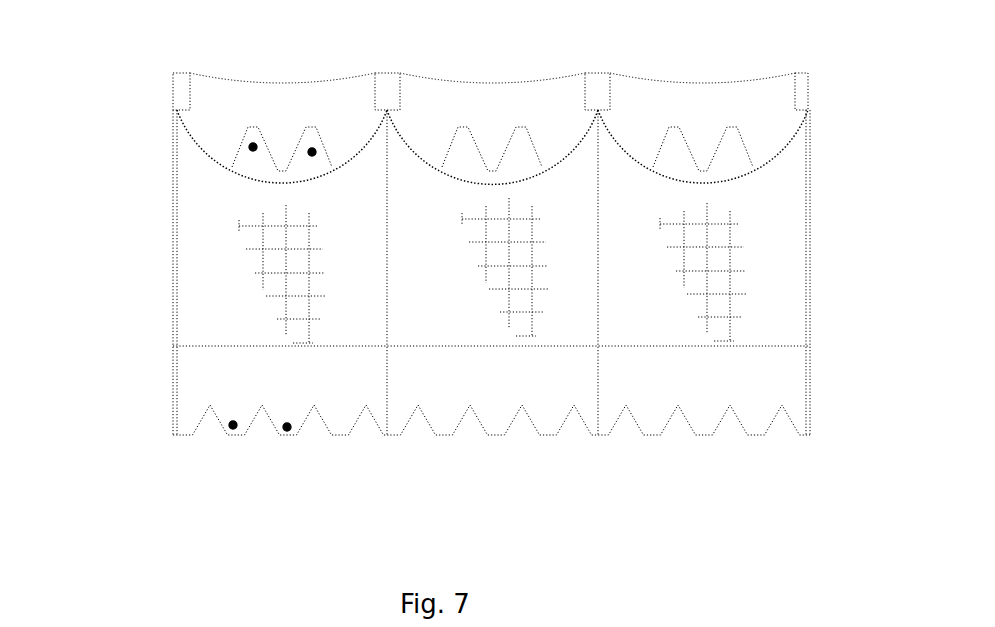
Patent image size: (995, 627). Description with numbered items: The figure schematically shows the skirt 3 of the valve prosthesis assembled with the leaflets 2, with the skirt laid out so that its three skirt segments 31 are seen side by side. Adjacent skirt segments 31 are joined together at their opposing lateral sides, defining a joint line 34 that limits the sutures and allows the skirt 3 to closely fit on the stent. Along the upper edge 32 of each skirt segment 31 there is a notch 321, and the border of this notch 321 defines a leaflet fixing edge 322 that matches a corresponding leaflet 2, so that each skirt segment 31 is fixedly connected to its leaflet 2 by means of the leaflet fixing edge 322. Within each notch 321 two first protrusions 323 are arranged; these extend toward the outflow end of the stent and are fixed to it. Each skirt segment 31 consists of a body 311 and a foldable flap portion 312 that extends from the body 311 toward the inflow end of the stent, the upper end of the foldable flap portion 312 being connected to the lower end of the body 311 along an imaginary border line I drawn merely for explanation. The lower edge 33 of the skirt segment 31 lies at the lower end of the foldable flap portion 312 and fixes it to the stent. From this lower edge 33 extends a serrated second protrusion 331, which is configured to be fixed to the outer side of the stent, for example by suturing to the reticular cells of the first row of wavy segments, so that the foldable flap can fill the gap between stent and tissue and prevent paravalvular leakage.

The skirt 3 is at (143, 138).
The leaflet 2 is at (288, 112).
The skirt segment 31 is at (68, 417).
The body 311 is at (209, 307).
The foldable flap portion 312 is at (212, 377).
The upper edge of skirt 32 is at (743, 177).
The notch 321 is at (232, 125).
The leaflet fixing edge 322 is at (358, 152).
The first protrusion 323 is at (312, 152).
The lower edge of skirt 33 is at (547, 435).
The second protrusion 331 is at (207, 457).
The joint line 34 is at (387, 275).
The border line I is at (667, 345).